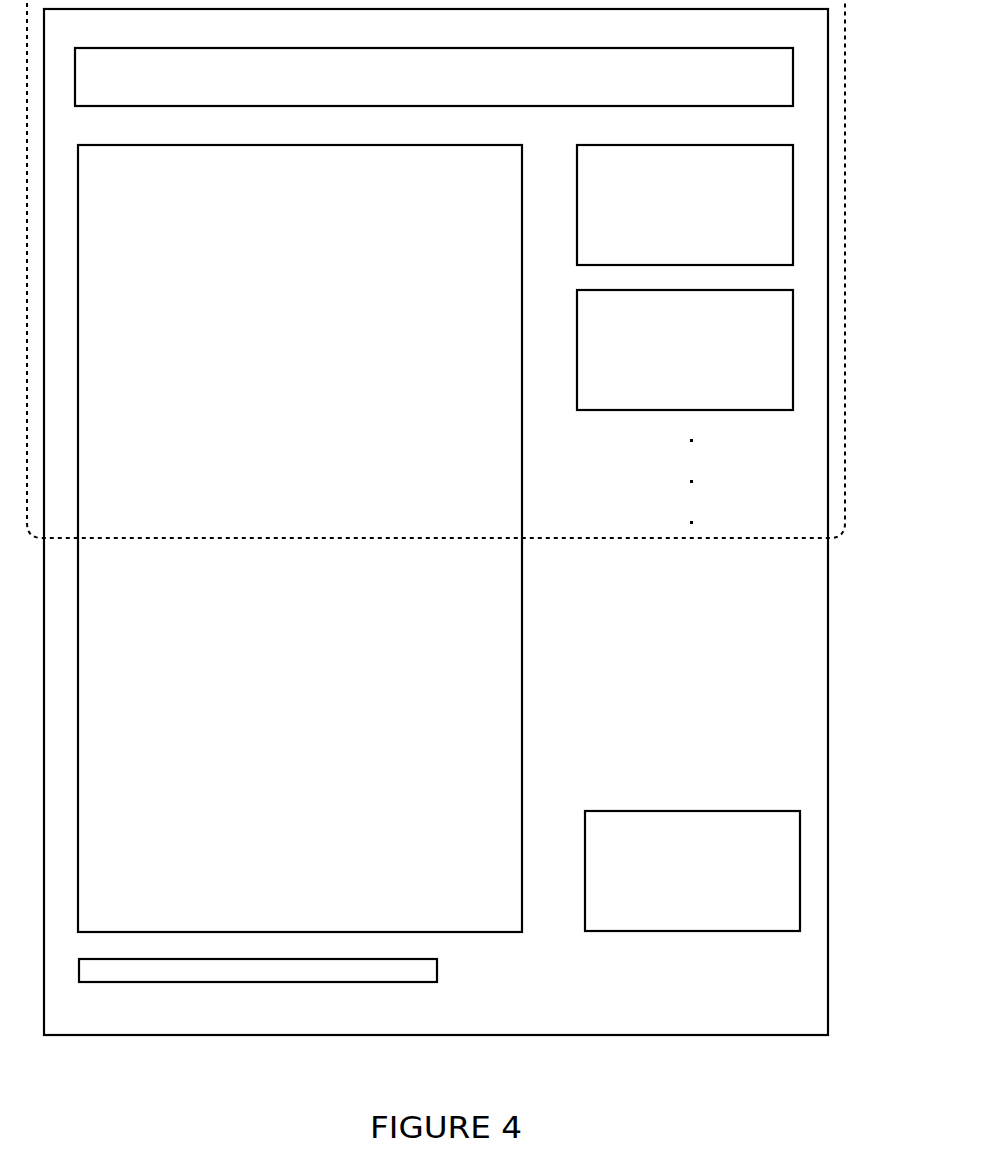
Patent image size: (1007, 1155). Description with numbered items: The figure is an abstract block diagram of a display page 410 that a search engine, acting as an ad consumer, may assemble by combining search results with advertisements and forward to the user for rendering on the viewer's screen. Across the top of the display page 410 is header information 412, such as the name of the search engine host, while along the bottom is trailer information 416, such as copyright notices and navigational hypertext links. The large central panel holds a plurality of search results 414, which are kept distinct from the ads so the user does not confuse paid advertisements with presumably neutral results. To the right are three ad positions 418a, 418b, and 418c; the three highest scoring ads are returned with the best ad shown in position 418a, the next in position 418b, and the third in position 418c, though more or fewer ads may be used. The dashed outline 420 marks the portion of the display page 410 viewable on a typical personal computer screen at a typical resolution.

The display page 410 is at (437, 1036).
The header information 412 is at (432, 48).
The search results 414 is at (522, 674).
The trailer information 416 is at (437, 970).
The ad position 418a is at (686, 146).
The ad position 418b is at (686, 291).
The ad position 418c is at (694, 811).
The outline 420 is at (812, 538).